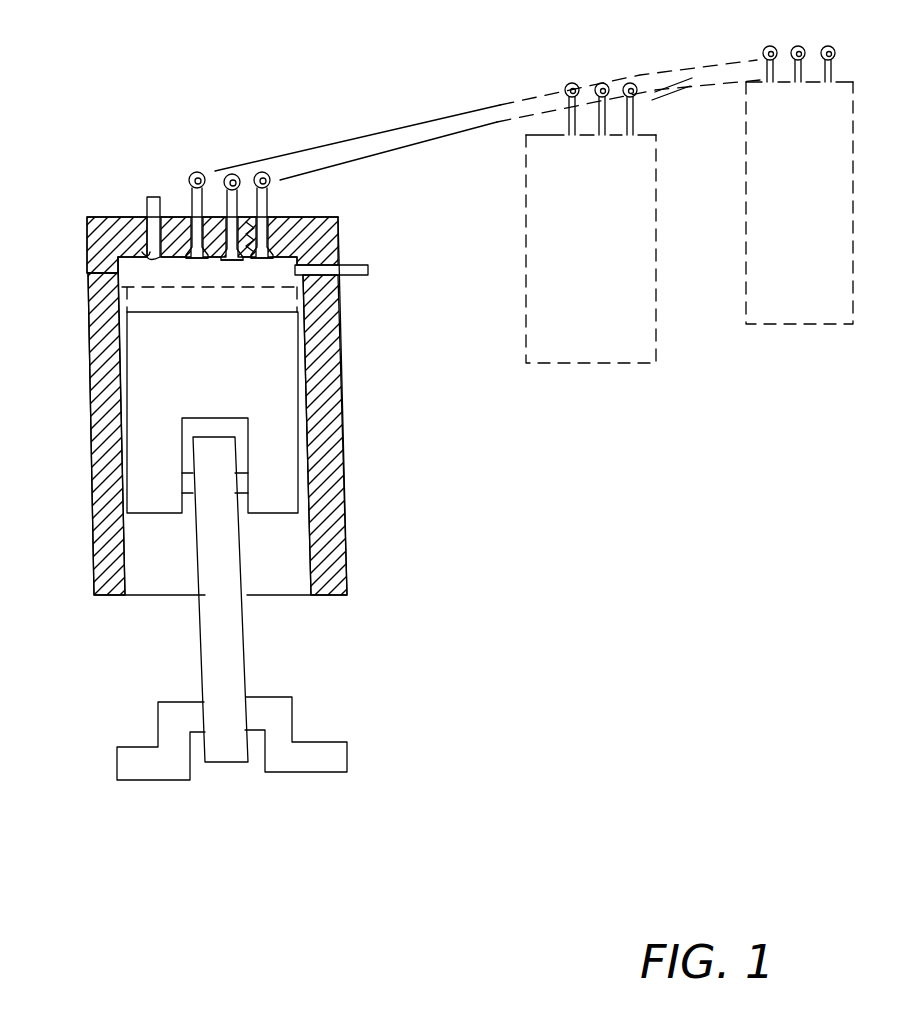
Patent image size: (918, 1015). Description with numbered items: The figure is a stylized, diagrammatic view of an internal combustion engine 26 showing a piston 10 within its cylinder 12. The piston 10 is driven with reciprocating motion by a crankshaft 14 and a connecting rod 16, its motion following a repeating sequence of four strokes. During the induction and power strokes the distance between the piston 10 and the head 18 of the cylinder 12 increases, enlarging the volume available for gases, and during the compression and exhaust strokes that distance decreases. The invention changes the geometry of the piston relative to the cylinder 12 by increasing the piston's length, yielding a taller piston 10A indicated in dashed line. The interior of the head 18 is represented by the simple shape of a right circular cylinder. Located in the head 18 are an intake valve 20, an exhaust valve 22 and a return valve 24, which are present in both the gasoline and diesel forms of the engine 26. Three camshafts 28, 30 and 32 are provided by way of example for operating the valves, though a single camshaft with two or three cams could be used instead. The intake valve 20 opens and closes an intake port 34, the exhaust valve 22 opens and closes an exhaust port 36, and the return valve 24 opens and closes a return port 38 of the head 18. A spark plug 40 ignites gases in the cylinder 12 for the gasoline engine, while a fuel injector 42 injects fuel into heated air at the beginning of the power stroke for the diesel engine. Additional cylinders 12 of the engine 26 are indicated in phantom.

The piston 10 is at (150, 398).
The taller piston 10A is at (285, 295).
The cylinder 12 is at (123, 562).
The crankshaft 14 is at (293, 720).
The connecting rod 16 is at (245, 643).
The head 18 is at (113, 216).
The intake valve 20 is at (200, 262).
The exhaust valve 22 is at (240, 260).
The return valve 24 is at (270, 258).
The engine 26 is at (475, 86).
The camshaft 28 is at (190, 172).
The camshaft 30 is at (224, 172).
The camshaft 32 is at (256, 172).
The intake port 34 is at (187, 215).
The exhaust port 36 is at (222, 213).
The return port 38 is at (273, 210).
The spark plug 40 is at (146, 207).
The fuel injector 42 is at (357, 263).